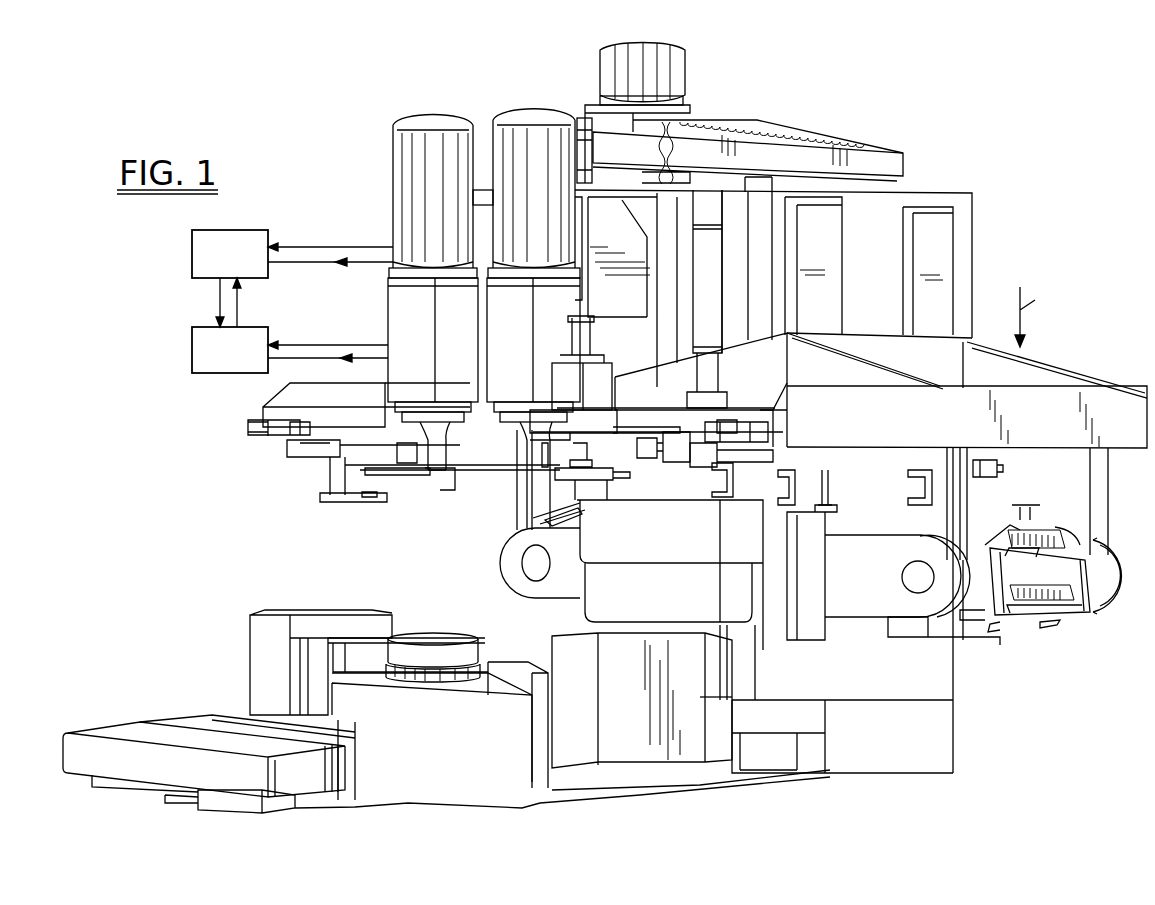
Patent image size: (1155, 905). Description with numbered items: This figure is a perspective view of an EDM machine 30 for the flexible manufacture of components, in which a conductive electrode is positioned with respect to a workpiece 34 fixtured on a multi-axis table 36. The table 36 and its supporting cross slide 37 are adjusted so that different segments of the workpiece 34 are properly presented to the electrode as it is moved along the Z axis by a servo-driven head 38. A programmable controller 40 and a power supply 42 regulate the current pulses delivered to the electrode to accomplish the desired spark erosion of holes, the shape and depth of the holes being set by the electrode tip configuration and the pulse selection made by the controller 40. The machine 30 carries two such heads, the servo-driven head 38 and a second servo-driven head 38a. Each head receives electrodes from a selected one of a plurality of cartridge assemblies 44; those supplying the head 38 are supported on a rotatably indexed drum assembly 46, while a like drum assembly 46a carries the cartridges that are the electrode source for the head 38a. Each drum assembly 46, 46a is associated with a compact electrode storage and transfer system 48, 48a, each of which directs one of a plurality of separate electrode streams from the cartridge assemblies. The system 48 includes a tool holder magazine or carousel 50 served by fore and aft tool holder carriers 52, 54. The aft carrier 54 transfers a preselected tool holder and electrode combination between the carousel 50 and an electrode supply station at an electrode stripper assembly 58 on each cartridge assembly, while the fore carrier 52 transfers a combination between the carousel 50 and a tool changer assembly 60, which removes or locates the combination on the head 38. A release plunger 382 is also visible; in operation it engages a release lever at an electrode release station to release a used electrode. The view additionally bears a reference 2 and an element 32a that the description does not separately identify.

The machine tool apparatus 2 is at (1035, 317).
The EDM machine 30 is at (890, 147).
The tool holder bracket 32a is at (444, 491).
The workpiece 34 is at (422, 642).
The multi-axis table 36 is at (397, 692).
The cross slide 37 is at (398, 795).
The servo-driven head 38 is at (522, 128).
The servo-driven head 38a is at (393, 148).
The programmable controller 40 is at (190, 252).
The power supply 42 is at (190, 352).
The cartridge assemblies 44 is at (545, 520).
The drum assembly 46 is at (893, 593).
The drum assembly 46a is at (530, 595).
The electrode storage and transfer system 48 is at (775, 508).
The electrode storage and transfer system 48a is at (318, 475).
The tool holder magazine or carousel 50 is at (775, 455).
The fore tool holder carrier 52 is at (679, 467).
The aft tool holder carrier 54 is at (1003, 470).
The electrode stripper assembly 58 is at (1018, 588).
The tool changer assembly 60 is at (598, 483).
The release plunger 382 is at (838, 505).